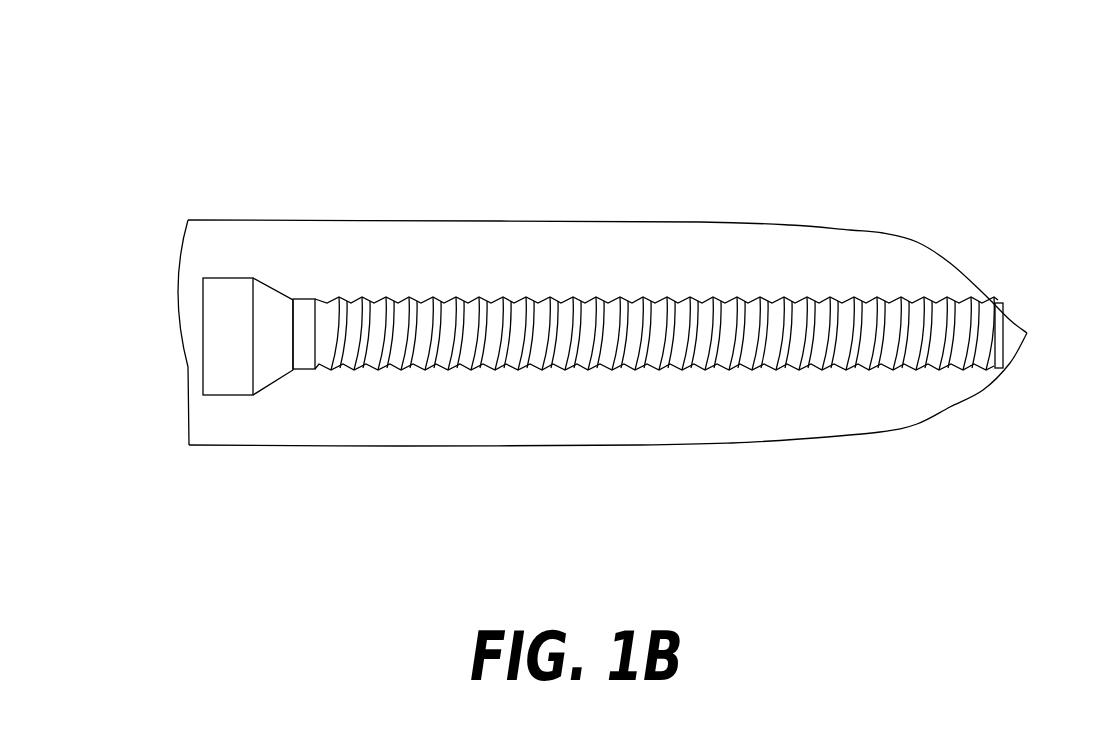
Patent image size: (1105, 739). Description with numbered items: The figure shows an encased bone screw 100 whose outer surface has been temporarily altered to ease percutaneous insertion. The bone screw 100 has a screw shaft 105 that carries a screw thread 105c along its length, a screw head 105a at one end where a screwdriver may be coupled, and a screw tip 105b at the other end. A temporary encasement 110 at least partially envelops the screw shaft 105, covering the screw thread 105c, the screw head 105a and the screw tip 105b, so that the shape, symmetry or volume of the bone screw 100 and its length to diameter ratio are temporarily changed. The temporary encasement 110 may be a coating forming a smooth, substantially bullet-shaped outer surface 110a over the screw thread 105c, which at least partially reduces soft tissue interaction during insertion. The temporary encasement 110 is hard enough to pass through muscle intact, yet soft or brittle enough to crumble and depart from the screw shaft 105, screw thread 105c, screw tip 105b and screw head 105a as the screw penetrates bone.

The bone screw 100 is at (569, 105).
The screw shaft 105 is at (293, 300).
The screw head 105a is at (204, 361).
The screw tip 105b is at (963, 297).
The screw thread 105c is at (803, 297).
The temporary encasement 110 is at (733, 443).
The outer surface 110a is at (418, 446).